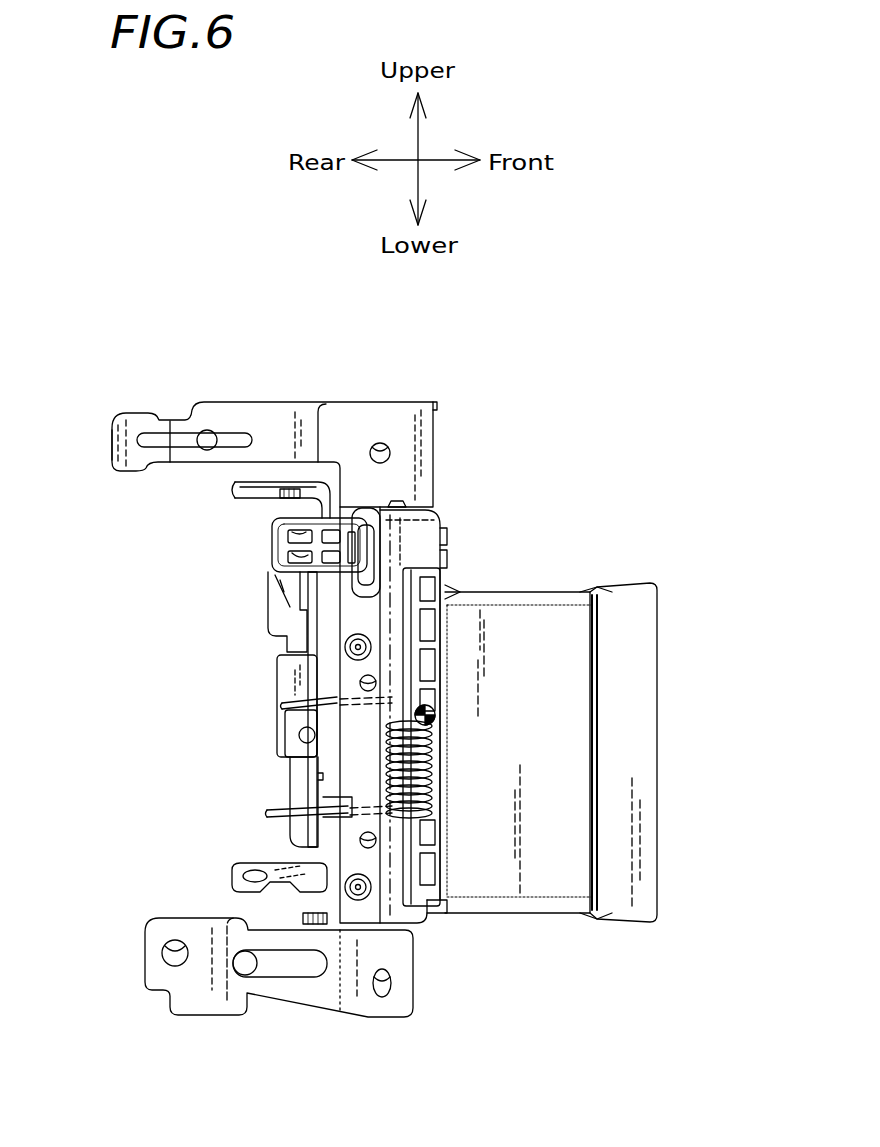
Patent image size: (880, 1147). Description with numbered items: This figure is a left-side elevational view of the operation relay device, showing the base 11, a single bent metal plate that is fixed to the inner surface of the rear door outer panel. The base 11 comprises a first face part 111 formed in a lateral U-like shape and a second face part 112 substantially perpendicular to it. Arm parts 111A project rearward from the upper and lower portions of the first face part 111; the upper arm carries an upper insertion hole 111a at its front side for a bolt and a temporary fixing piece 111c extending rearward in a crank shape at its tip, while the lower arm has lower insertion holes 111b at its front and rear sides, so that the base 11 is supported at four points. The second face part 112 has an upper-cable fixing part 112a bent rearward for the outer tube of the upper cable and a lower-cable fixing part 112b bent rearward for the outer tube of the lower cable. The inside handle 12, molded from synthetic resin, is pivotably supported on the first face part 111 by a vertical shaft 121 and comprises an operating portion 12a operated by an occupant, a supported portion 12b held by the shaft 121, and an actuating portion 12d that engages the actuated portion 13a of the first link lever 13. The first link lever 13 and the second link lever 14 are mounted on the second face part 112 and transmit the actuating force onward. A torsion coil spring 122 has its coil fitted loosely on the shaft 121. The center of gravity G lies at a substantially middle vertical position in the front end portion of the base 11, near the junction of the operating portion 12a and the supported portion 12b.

The base 11 is at (423, 392).
The first face part 111 is at (145, 942).
The arm part 111A is at (188, 402).
The upper insertion hole 111a is at (378, 443).
The lower insertion hole 111b is at (178, 958).
The temporary fixing piece 111c is at (125, 416).
The second face part 112 is at (290, 786).
The upper-cable fixing part 112a is at (240, 483).
The lower-cable fixing part 112b is at (235, 870).
The inside handle 12 is at (665, 660).
The operating portion 12a is at (606, 590).
The supported portion 12b is at (446, 548).
The actuating portion 12d is at (286, 548).
The shaft 121 is at (448, 520).
The torsion coil spring 122 is at (444, 812).
The first link lever 13 is at (268, 602).
The actuated portion 13a is at (271, 532).
The second link lever 14 is at (270, 712).
The center of gravity G is at (428, 706).